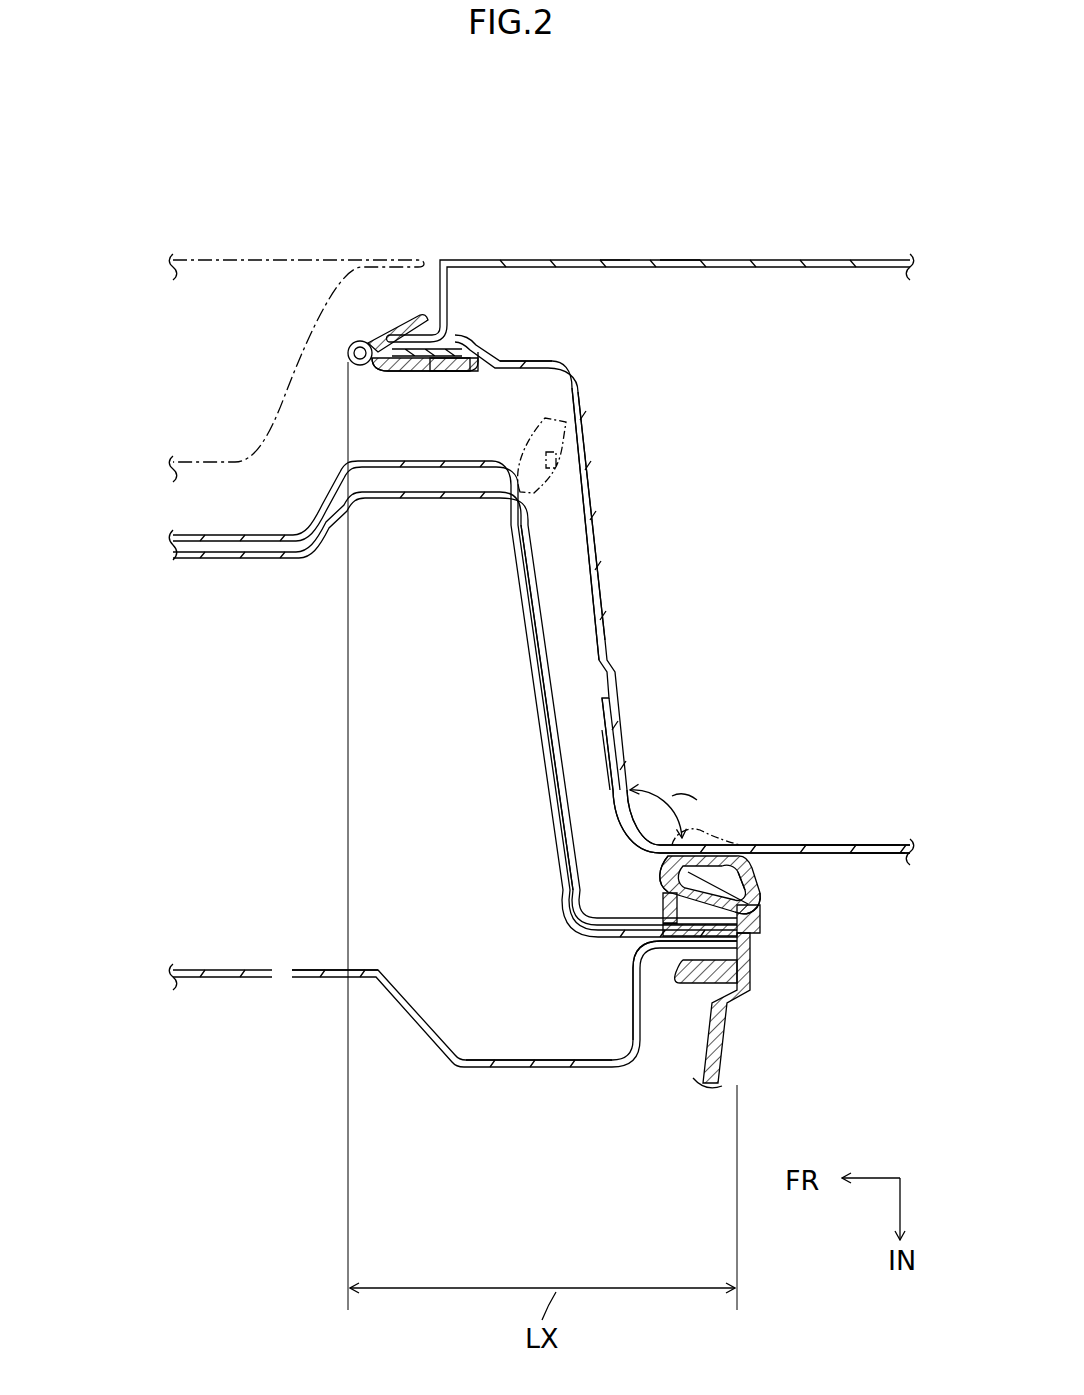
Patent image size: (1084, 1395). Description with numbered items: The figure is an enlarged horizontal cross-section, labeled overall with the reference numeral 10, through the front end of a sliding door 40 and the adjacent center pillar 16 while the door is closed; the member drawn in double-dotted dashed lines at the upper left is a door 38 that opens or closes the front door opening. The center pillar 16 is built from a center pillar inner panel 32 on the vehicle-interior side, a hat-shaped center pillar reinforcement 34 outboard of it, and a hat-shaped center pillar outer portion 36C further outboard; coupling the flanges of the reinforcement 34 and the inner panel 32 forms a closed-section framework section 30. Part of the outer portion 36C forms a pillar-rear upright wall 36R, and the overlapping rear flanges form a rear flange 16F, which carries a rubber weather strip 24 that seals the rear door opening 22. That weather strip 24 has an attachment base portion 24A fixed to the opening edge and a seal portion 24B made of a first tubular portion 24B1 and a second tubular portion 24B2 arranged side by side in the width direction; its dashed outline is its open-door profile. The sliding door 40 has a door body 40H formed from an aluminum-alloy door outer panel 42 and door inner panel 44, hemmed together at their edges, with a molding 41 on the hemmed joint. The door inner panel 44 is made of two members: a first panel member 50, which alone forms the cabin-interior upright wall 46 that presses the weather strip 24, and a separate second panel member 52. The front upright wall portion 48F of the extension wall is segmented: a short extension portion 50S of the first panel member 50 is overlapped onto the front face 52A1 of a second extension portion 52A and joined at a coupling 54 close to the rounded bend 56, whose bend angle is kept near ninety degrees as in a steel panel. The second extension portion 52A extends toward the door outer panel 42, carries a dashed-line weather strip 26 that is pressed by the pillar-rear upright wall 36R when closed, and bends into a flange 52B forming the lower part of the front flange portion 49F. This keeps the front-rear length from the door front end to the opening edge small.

The vehicle roof structure 10 is at (516, 183).
The door 38 is at (291, 252).
The sliding door 40 is at (780, 238).
The door body 40H is at (677, 252).
The door outer panel 42 is at (608, 258).
The molding 41 is at (403, 372).
The front flange portion 49F is at (446, 372).
The second panel member 52 is at (593, 522).
The flange 52B is at (454, 336).
The front upright wall portion 48F is at (622, 565).
The second extension portion 52A is at (606, 629).
The front face 52A1 is at (600, 726).
The coupling 54 is at (626, 752).
The bend 56 is at (620, 854).
The first panel member 50 is at (890, 838).
The short extension portion 50S is at (600, 743).
The door inner panel 44 is at (850, 820).
The cabin-interior upright wall 46 is at (889, 862).
The center pillar outer portion 36C is at (188, 530).
The center pillar reinforcement 34 is at (296, 560).
The pillar-rear upright wall 36R is at (545, 606).
The weather strip 26 is at (516, 543).
The center pillar 16 is at (473, 1112).
The rear flange 16F is at (681, 980).
The framework section 30 is at (520, 1080).
The center pillar inner panel 32 is at (331, 968).
The weather strip 24 is at (727, 840).
The attachment base portion 24A is at (750, 950).
The seal portion 24B is at (766, 878).
The first tubular portion 24B1 is at (760, 898).
The second tubular portion 24B2 is at (672, 868).
The rear door opening 22 is at (752, 965).